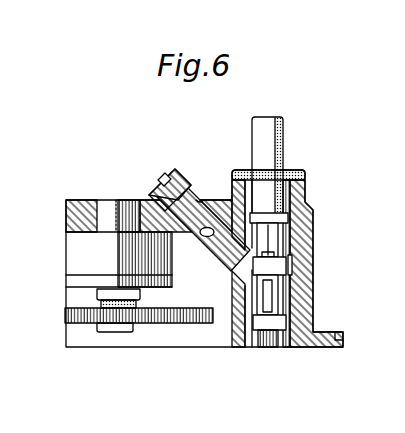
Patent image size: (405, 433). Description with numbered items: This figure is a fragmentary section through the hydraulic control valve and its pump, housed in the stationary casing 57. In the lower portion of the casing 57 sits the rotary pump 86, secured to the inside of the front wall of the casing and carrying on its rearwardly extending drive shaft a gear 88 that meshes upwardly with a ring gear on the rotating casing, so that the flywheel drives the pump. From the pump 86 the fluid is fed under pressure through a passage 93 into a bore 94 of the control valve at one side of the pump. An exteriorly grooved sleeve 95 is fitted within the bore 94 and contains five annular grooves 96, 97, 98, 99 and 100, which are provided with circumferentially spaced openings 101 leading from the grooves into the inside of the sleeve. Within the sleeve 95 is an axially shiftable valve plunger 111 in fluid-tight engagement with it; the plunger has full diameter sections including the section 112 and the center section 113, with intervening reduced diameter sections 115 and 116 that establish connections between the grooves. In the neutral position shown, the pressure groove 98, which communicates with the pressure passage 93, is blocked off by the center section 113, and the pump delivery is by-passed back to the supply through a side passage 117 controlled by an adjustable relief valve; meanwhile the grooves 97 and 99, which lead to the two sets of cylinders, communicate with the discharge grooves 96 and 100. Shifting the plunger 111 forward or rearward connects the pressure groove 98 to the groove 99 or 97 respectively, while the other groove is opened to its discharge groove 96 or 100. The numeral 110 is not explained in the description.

The stationary casing 57 is at (83, 206).
The rotary pump 86 is at (163, 262).
The gear 88 is at (179, 323).
The passage 93 is at (193, 192).
The bore 94 is at (273, 347).
The exteriorly grooved sleeve 95 is at (305, 176).
The discharge groove 96 is at (300, 213).
The groove 97 is at (292, 245).
The pressure groove 98 is at (288, 262).
The groove 99 is at (291, 293).
The discharge groove 100 is at (306, 303).
The openings 101 is at (249, 268).
The base flange 110 is at (316, 327).
The valve plunger 111 is at (283, 136).
The full diameter section 112 is at (296, 190).
The center section 113 is at (300, 276).
The reduced diameter section 115 is at (270, 229).
The reduced diameter section 116 is at (312, 302).
The side passage 117 is at (207, 199).